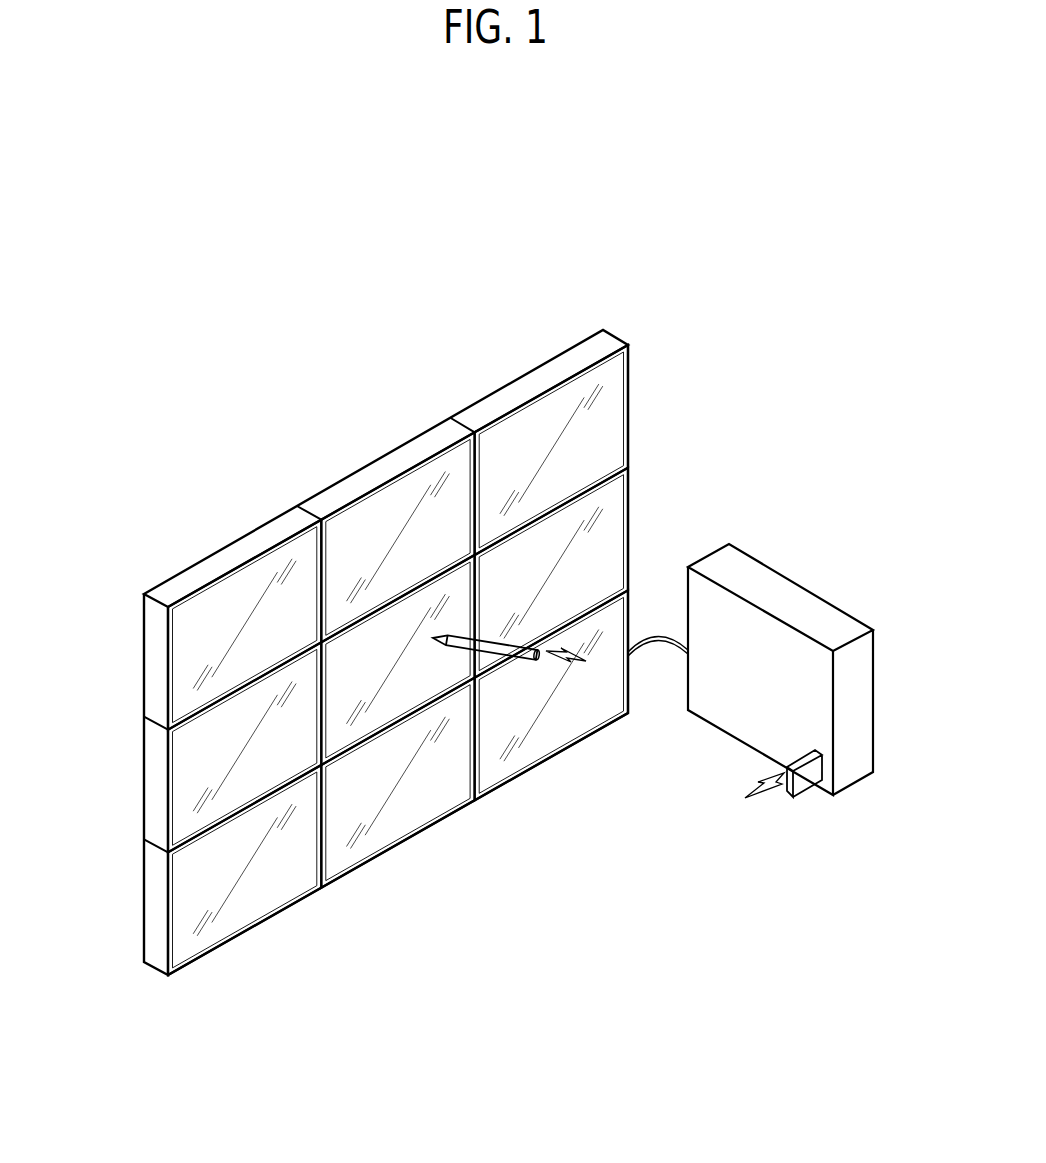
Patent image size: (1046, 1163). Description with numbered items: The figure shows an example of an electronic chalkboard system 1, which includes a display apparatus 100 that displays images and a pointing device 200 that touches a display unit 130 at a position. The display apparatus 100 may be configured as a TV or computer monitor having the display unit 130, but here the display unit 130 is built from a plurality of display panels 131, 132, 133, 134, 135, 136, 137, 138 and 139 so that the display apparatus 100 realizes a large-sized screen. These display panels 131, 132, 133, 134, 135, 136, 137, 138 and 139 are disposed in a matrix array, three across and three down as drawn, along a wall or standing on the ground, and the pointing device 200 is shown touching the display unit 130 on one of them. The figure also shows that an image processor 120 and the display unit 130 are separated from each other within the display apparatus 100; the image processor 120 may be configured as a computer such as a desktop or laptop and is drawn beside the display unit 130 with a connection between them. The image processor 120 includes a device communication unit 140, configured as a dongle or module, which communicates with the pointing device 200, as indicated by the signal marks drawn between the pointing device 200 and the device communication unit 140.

The electronic chalkboard system 1 is at (181, 286).
The display apparatus 100 is at (934, 538).
The image processor 120 is at (762, 555).
The display unit 130 is at (633, 467).
The display panel 131 is at (238, 583).
The display panel 132 is at (380, 497).
The display panel 133 is at (528, 417).
The display panel 134 is at (197, 785).
The display panel 135 is at (348, 718).
The display panel 136 is at (558, 605).
The display panel 137 is at (260, 900).
The display panel 138 is at (398, 820).
The display panel 139 is at (538, 740).
The device communication unit 140 is at (803, 750).
The pointing device 200 is at (487, 648).